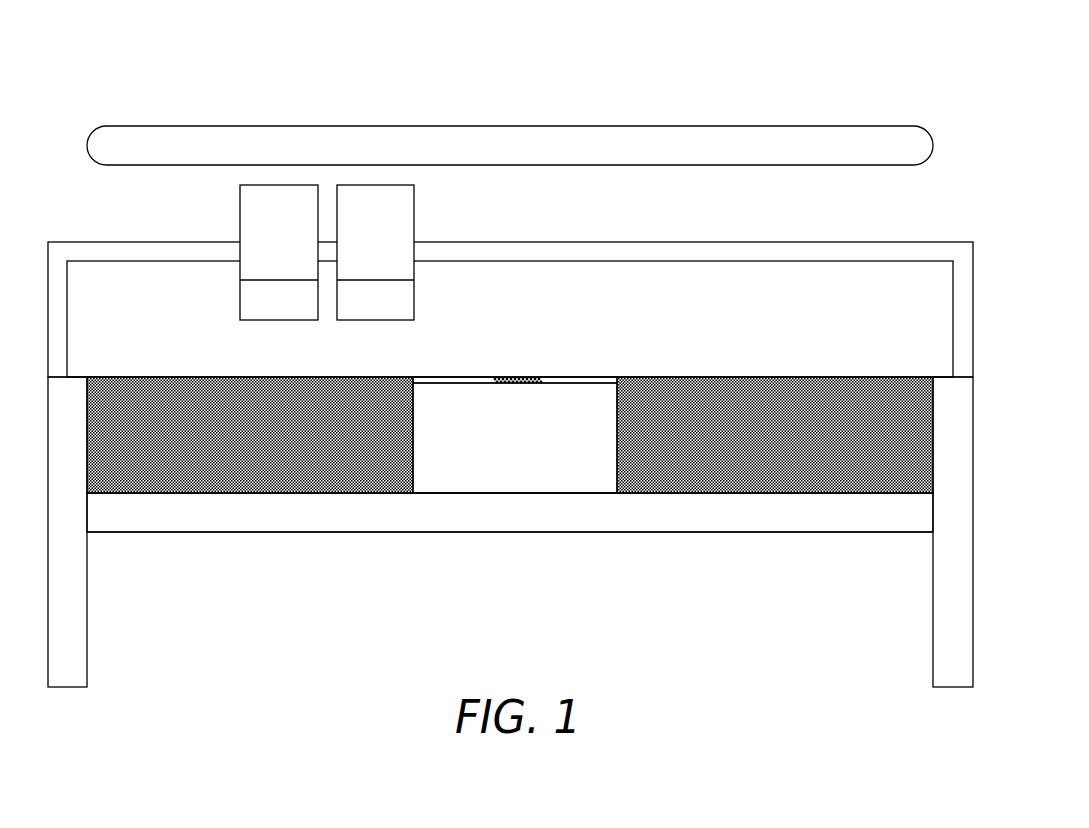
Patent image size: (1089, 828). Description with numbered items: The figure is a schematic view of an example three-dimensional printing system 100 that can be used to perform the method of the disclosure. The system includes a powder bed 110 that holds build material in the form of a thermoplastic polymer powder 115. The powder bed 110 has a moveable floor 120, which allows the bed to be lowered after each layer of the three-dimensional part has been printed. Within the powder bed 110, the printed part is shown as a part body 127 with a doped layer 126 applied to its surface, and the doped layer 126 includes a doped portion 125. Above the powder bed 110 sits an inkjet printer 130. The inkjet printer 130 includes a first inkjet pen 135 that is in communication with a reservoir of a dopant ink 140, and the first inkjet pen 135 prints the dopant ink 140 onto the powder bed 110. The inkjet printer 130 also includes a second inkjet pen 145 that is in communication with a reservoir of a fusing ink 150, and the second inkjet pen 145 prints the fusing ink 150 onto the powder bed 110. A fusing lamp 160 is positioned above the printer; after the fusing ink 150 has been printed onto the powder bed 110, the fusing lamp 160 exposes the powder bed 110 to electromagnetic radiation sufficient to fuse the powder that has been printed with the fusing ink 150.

The 3-dimensional printing system 100 is at (157, 48).
The powder bed 110 is at (830, 575).
The thermoplastic polymer powder 115 is at (775, 390).
The moveable floor 120 is at (645, 515).
The doped portion 125 is at (535, 377).
The doped layer 126 is at (583, 380).
The part body 127 is at (511, 452).
The inkjet printer 130 is at (941, 213).
The first inkjet pen 135 is at (207, 305).
The dopant ink 140 is at (265, 220).
The second inkjet pen 145 is at (442, 290).
The fusing ink 150 is at (387, 213).
The fusing lamp 160 is at (604, 147).